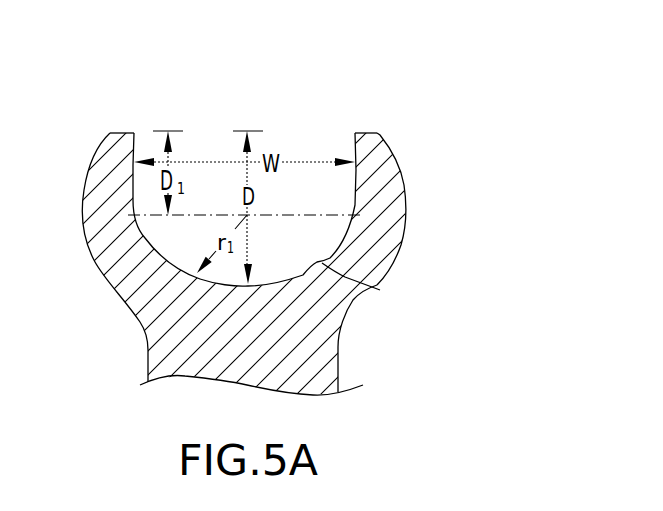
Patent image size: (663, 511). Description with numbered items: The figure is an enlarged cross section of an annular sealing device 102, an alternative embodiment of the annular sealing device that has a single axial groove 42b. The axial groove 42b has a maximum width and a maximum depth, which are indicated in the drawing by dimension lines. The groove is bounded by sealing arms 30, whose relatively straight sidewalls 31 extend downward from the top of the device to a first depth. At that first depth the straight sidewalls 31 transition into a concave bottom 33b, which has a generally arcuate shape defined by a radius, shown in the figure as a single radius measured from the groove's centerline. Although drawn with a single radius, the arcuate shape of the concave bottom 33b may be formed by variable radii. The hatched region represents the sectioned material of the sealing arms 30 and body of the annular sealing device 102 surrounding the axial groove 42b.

The annular sealing device 102 is at (459, 217).
The sealing arm 30 is at (407, 184).
The straight sidewall 31 is at (355, 180).
The concave bottom 33b is at (380, 290).
The axial groove 42b is at (331, 108).